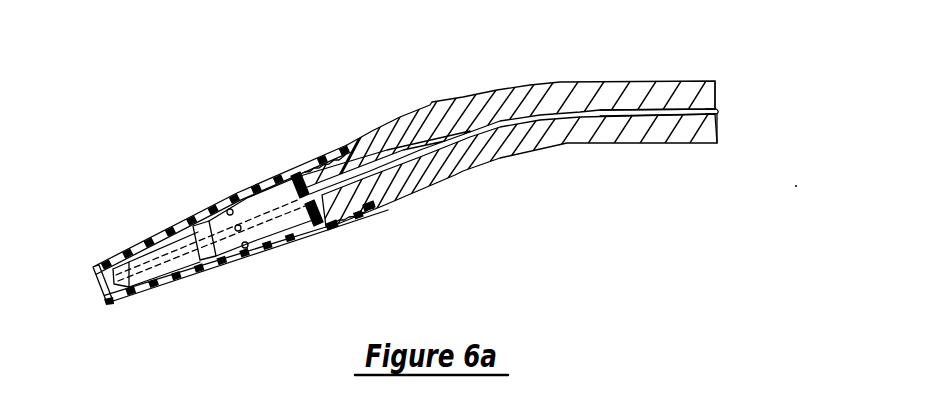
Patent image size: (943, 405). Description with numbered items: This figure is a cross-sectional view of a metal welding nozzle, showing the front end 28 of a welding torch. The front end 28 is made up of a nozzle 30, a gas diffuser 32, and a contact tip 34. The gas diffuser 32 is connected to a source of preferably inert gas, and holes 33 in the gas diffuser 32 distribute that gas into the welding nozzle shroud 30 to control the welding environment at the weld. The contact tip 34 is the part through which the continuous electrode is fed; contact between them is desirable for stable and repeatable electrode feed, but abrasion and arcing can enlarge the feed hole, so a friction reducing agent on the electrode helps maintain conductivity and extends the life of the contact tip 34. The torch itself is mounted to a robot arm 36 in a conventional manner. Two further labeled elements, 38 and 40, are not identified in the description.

The front end 28 is at (407, 100).
The nozzle 30 is at (163, 230).
The gas diffuser 32 is at (203, 220).
The holes 33 is at (233, 209).
The contact tip 34 is at (156, 278).
The robot arm 36 is at (655, 78).
The lumen end 38 is at (718, 111).
The inner tube 40 is at (304, 163).